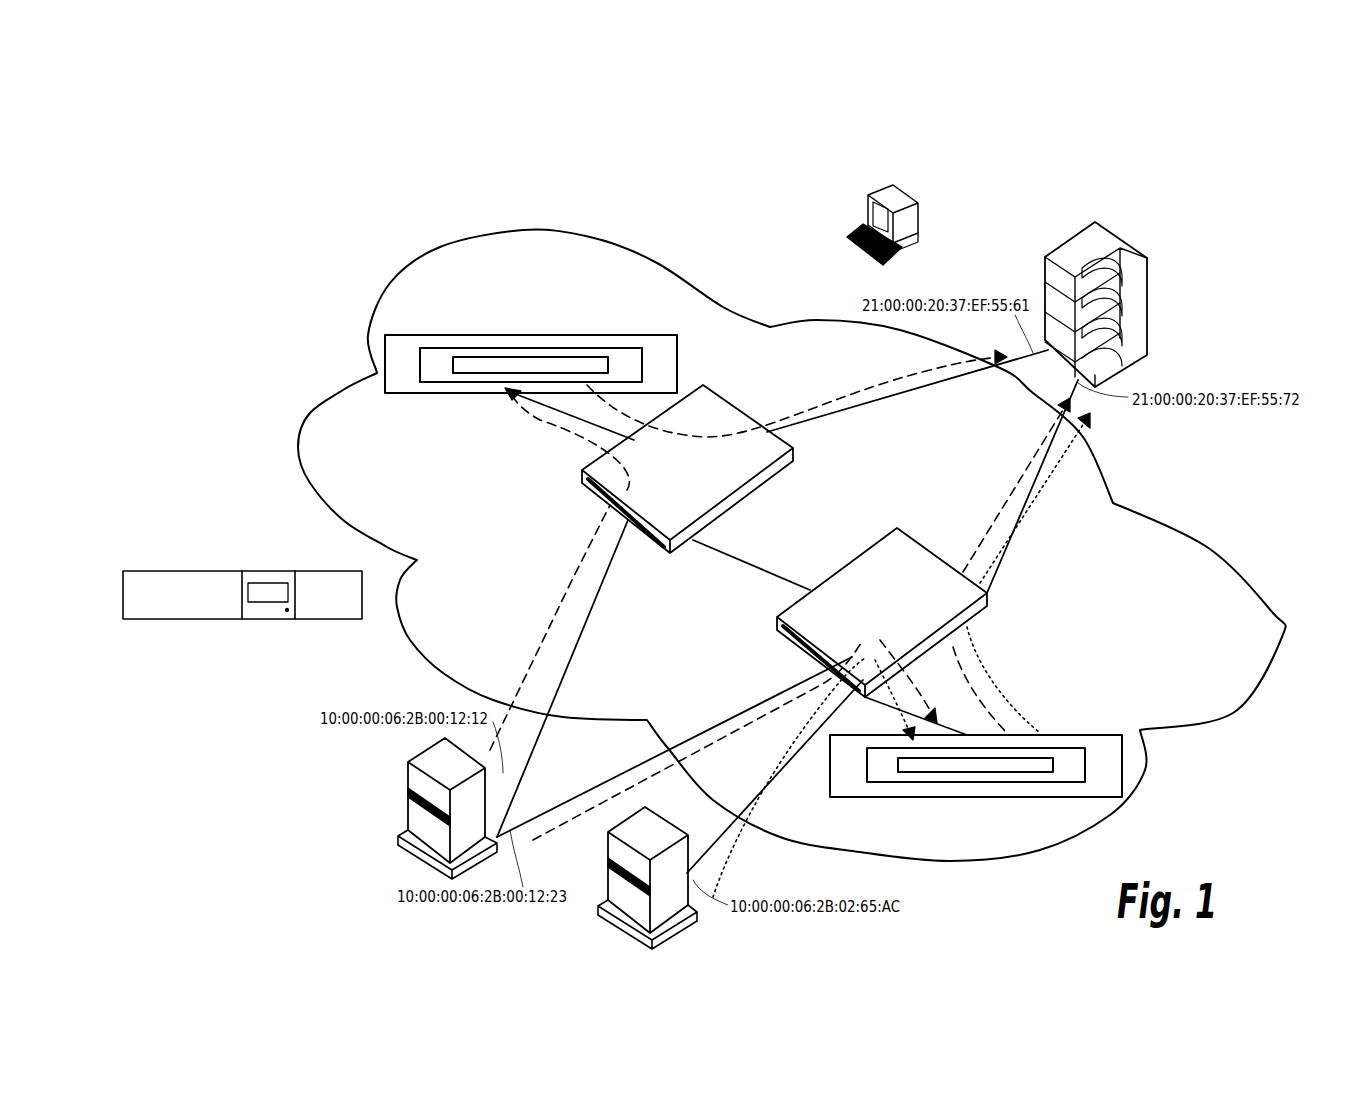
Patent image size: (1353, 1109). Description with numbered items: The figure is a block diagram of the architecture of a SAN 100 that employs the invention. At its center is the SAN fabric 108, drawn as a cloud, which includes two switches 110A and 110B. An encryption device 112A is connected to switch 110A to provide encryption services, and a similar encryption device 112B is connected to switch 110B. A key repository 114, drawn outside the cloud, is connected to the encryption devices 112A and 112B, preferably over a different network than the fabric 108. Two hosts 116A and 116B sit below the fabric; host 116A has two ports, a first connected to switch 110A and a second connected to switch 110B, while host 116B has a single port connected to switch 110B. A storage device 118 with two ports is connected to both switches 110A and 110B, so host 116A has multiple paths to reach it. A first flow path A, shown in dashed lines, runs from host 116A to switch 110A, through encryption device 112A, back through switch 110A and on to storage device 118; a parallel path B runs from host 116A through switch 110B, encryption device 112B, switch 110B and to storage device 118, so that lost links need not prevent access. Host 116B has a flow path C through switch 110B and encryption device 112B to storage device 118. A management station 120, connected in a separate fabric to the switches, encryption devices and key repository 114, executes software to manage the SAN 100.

The SAN 100 is at (1032, 158).
The SAN fabric 108 is at (1173, 730).
The switch 110A is at (730, 515).
The switch 110B is at (977, 620).
The encryption device 112A is at (527, 333).
The encryption device 112B is at (938, 798).
The key repository 114 is at (228, 623).
The host 116A is at (407, 852).
The host 116B is at (628, 940).
The storage device 118 is at (1153, 302).
The management station 120 is at (902, 190).
The first flow path A is at (580, 570).
The parallel flow path B is at (580, 820).
The flow path C is at (740, 840).